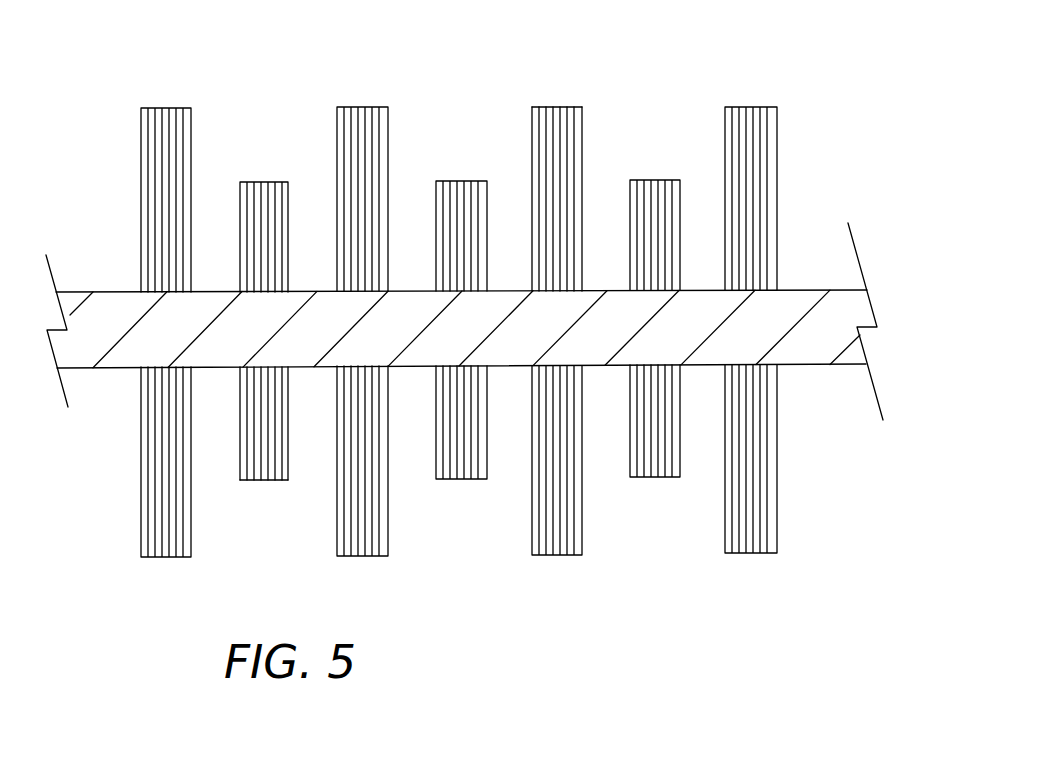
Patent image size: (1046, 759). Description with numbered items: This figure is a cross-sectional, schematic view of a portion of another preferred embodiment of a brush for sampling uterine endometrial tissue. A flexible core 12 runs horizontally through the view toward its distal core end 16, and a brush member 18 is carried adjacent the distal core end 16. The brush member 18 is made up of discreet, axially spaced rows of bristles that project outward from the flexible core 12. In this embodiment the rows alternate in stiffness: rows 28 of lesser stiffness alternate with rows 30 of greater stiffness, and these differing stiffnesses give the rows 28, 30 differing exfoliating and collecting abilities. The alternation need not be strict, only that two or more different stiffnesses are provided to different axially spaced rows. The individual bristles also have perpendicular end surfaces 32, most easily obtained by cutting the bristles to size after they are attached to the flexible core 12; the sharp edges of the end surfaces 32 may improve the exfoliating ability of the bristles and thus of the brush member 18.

The flexible core 12 is at (415, 372).
The distal core end 16 is at (835, 290).
The brush member 18 is at (496, 304).
The rows of bristles of lesser stiffness 28 is at (190, 115).
The rows of bristles of greater stiffness 30 is at (238, 198).
The perpendicular end surfaces 32 is at (553, 100).